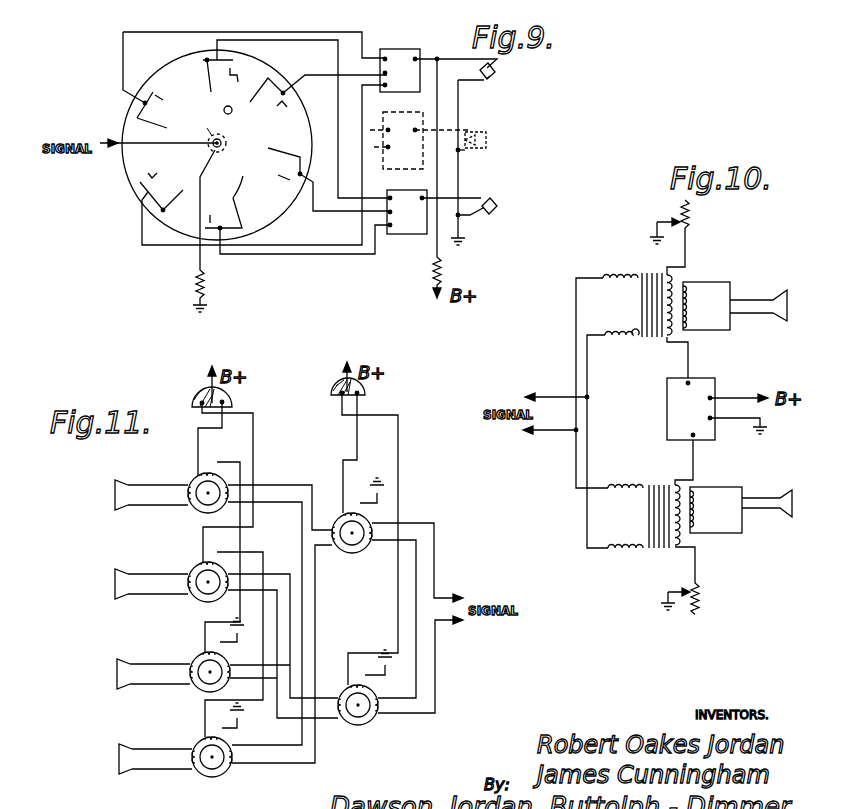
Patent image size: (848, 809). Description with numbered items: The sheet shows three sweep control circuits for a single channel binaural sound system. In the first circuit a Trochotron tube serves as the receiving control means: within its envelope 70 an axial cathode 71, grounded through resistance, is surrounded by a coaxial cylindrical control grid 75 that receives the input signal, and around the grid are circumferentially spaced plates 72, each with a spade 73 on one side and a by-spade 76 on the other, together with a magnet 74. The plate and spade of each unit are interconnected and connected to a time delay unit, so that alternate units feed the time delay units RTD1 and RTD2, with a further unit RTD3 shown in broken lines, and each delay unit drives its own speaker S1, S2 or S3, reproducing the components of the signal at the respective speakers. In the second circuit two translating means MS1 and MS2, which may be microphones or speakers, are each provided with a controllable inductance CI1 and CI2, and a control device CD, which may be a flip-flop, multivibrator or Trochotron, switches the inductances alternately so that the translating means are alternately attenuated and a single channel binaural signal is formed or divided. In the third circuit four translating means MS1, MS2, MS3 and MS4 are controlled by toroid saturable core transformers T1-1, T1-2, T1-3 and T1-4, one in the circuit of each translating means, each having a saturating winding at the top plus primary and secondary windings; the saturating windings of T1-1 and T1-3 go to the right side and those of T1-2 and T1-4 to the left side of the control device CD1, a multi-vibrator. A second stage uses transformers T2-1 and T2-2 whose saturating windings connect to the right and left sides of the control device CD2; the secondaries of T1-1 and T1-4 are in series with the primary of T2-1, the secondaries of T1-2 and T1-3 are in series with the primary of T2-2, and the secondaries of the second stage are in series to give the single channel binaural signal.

In FIG. 9, the envelope 70 is at (123, 124).
In FIG. 9, the axial cathode 71 is at (224, 140).
In FIG. 9, the plates 72 is at (136, 199).
In FIG. 9, the spades 73 is at (183, 199).
In FIG. 9, the magnet 74 is at (224, 108).
In FIG. 9, the coaxial cylindrical control grid 75 is at (213, 136).
In FIG. 9, the by-spades 76 is at (215, 123).
In FIG. 9, the time delay unit RTD1 is at (402, 52).
In FIG. 9, the time delay unit RTD2 is at (412, 236).
In FIG. 9, the time delay unit RTD3 is at (427, 113).
In FIG. 9, the speaker S1 is at (497, 80).
In FIG. 9, the speaker S2 is at (498, 197).
In FIG. 9, the speaker S3 is at (488, 141).
In FIG. 10, the controllable inductance CI1 is at (639, 263).
In FIG. 10, the controllable inductance CI2 is at (638, 561).
In FIG. 10, the control device CD is at (683, 421).
In FIG. 10, the translating means MS1 is at (797, 292).
In FIG. 11, the translating means MS1 is at (115, 501).
In FIG. 10, the translating means MS2 is at (791, 518).
In FIG. 11, the translating means MS2 is at (115, 590).
In FIG. 11, the translating means MS3 is at (117, 678).
In FIG. 11, the translating means MS4 is at (119, 763).
In FIG. 11, the control device CD1 is at (204, 395).
In FIG. 11, the control device CD2 is at (330, 395).
In FIG. 11, the saturable core transformer T1-1 is at (197, 511).
In FIG. 11, the saturable core transformer T1-2 is at (200, 603).
In FIG. 11, the saturable core transformer T1-3 is at (203, 690).
In FIG. 11, the saturable core transformer T1-4 is at (213, 777).
In FIG. 11, the saturable core transformer T2-1 is at (349, 554).
In FIG. 11, the saturable core transformer T2-2 is at (352, 724).